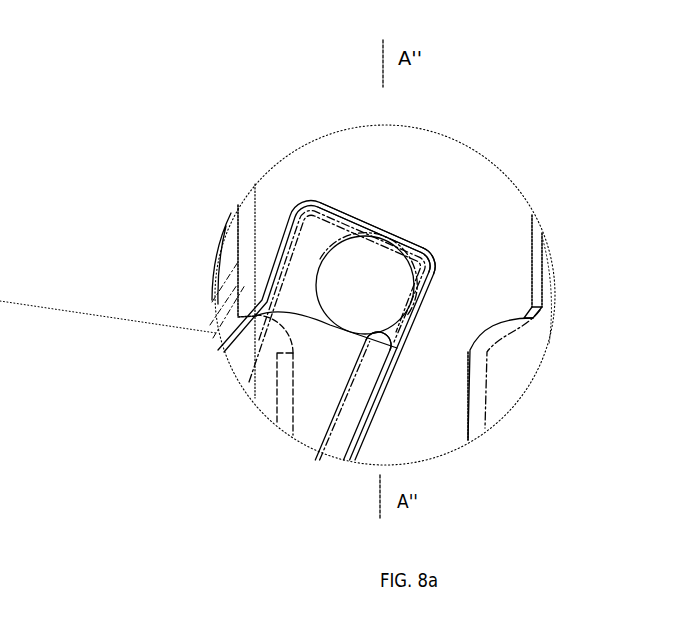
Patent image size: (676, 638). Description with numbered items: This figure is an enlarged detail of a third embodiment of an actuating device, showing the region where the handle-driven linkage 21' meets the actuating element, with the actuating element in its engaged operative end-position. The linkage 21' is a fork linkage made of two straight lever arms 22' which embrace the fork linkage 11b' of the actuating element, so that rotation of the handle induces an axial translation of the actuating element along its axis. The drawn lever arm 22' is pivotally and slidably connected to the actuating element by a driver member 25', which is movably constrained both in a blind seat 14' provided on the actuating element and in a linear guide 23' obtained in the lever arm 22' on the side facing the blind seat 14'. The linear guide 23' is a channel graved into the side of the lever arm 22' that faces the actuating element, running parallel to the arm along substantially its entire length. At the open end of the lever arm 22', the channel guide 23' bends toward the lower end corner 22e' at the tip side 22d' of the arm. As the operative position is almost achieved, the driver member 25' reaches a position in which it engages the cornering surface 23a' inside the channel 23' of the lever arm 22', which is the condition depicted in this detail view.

The fork linkage of the actuating element 11b' is at (488, 248).
The lever arm 22' is at (409, 322).
The tip side of the lever arm 22d' is at (354, 155).
The lower end corner of the lever arm 22e' is at (529, 210).
The linkage 21' is at (410, 415).
The cornering surface 23a' is at (485, 388).
The linear guide 23' is at (242, 414).
The driver member 25' is at (252, 256).
The blind seat 14' is at (252, 256).